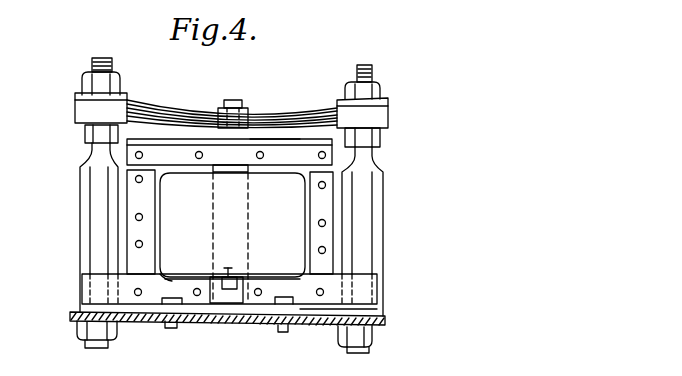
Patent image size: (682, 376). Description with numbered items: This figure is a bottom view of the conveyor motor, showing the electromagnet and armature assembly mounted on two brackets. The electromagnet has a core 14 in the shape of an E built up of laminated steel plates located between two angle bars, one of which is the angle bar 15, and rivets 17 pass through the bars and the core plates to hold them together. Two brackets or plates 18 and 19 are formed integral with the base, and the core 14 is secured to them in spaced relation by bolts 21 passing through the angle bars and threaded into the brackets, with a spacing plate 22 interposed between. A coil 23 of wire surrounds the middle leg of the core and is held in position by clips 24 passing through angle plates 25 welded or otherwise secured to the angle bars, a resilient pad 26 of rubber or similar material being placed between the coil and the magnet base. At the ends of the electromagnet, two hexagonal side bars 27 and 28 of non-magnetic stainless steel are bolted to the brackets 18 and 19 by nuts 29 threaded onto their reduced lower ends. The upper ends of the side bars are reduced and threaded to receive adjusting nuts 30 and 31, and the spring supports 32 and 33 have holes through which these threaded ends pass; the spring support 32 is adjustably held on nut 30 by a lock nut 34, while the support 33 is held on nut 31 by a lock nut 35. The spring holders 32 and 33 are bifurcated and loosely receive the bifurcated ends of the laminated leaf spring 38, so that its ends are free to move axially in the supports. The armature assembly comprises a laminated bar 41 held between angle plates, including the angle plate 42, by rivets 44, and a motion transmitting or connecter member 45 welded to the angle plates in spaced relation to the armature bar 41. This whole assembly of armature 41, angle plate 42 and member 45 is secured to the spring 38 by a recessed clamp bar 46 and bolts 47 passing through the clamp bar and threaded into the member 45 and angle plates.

The core 14 is at (130, 236).
The angle bar 15 is at (207, 300).
The rivets 17 is at (258, 297).
The bracket or plate 18 is at (305, 325).
The bracket or plate 19 is at (160, 322).
The bolts 21 is at (283, 332).
The spacing plate 22 is at (315, 312).
The coil 23 is at (292, 210).
The clips 24 is at (238, 285).
The angle plates 25 is at (204, 275).
The resilient pad 26 is at (165, 300).
The hexagonal side bar 27 is at (98, 195).
The hexagonal side bar 28 is at (363, 250).
The nuts 29 is at (77, 330).
The adjusting nut 30 is at (86, 133).
The adjusting nut 31 is at (382, 138).
The spring support 32 is at (78, 113).
The spring support 33 is at (389, 104).
The lock nut 34 is at (84, 81).
The lock nut 35 is at (382, 89).
The spring 38 is at (310, 118).
The armature bar 41 is at (165, 152).
The angle plate 42 is at (259, 150).
The rivets 44 is at (201, 151).
The motion transmitting or connecter member 45 is at (277, 137).
The recessed clamp bar 46 is at (241, 120).
The bolts 47 is at (232, 108).